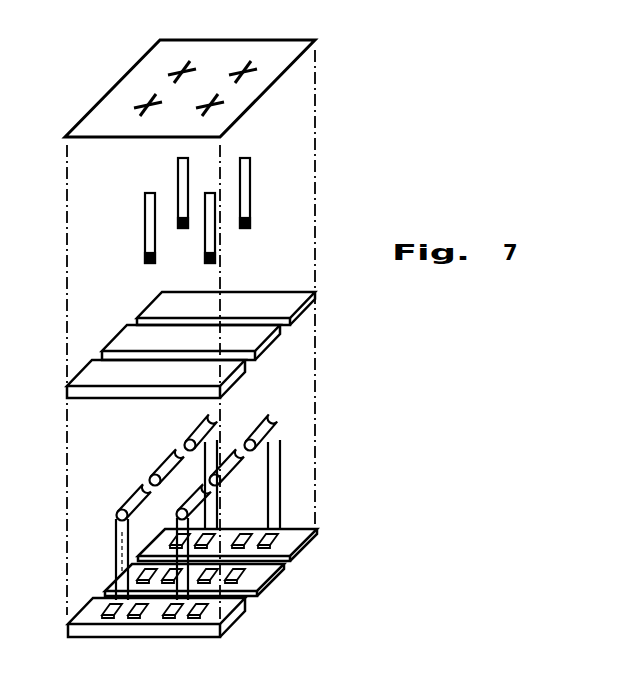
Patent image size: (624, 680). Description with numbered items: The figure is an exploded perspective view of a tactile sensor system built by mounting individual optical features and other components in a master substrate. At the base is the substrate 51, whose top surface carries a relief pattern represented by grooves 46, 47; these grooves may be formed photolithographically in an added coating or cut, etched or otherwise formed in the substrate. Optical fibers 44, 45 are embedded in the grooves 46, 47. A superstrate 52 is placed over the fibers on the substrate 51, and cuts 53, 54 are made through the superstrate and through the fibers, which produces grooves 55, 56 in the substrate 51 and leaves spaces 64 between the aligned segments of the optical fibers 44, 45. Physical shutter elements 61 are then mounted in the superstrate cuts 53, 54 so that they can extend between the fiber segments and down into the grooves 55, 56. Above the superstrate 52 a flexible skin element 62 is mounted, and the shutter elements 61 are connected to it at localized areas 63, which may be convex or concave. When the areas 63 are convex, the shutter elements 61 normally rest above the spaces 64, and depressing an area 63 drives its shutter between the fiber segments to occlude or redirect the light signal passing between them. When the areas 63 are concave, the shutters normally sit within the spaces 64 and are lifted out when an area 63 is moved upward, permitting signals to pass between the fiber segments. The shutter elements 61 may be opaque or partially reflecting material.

The flexible skin element 62 is at (313, 43).
The localized areas 63 is at (186, 66).
The shutter elements 61 is at (178, 172).
The superstrate 52 is at (308, 304).
The cut 53 is at (153, 320).
The cut 54 is at (101, 355).
The spaces 64 is at (184, 444).
The optical fiber 44 is at (118, 508).
The optical fiber 45 is at (184, 508).
The groove 46 is at (202, 530).
The groove 47 is at (262, 530).
The substrate 51 is at (312, 541).
The groove 55 is at (286, 569).
The groove 56 is at (257, 586).